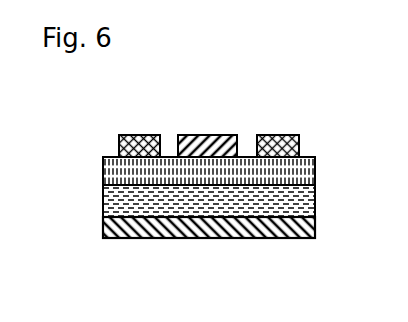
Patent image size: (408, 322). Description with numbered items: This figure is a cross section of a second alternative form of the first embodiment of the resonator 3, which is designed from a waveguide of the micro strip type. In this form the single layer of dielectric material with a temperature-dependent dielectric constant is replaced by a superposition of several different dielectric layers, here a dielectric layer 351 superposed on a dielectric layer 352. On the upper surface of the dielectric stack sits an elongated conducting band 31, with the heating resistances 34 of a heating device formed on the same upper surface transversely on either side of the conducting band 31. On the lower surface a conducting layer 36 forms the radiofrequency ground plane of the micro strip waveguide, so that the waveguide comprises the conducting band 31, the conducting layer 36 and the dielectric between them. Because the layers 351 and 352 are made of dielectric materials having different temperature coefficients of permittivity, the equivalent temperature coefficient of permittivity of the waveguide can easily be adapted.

The resonator 3 is at (108, 88).
The elongated conducting band 31 is at (208, 134).
The heating resistances 34 is at (139, 134).
The dielectric layer 351 is at (315, 172).
The dielectric layer 352 is at (315, 202).
The conducting layer 36 is at (208, 239).